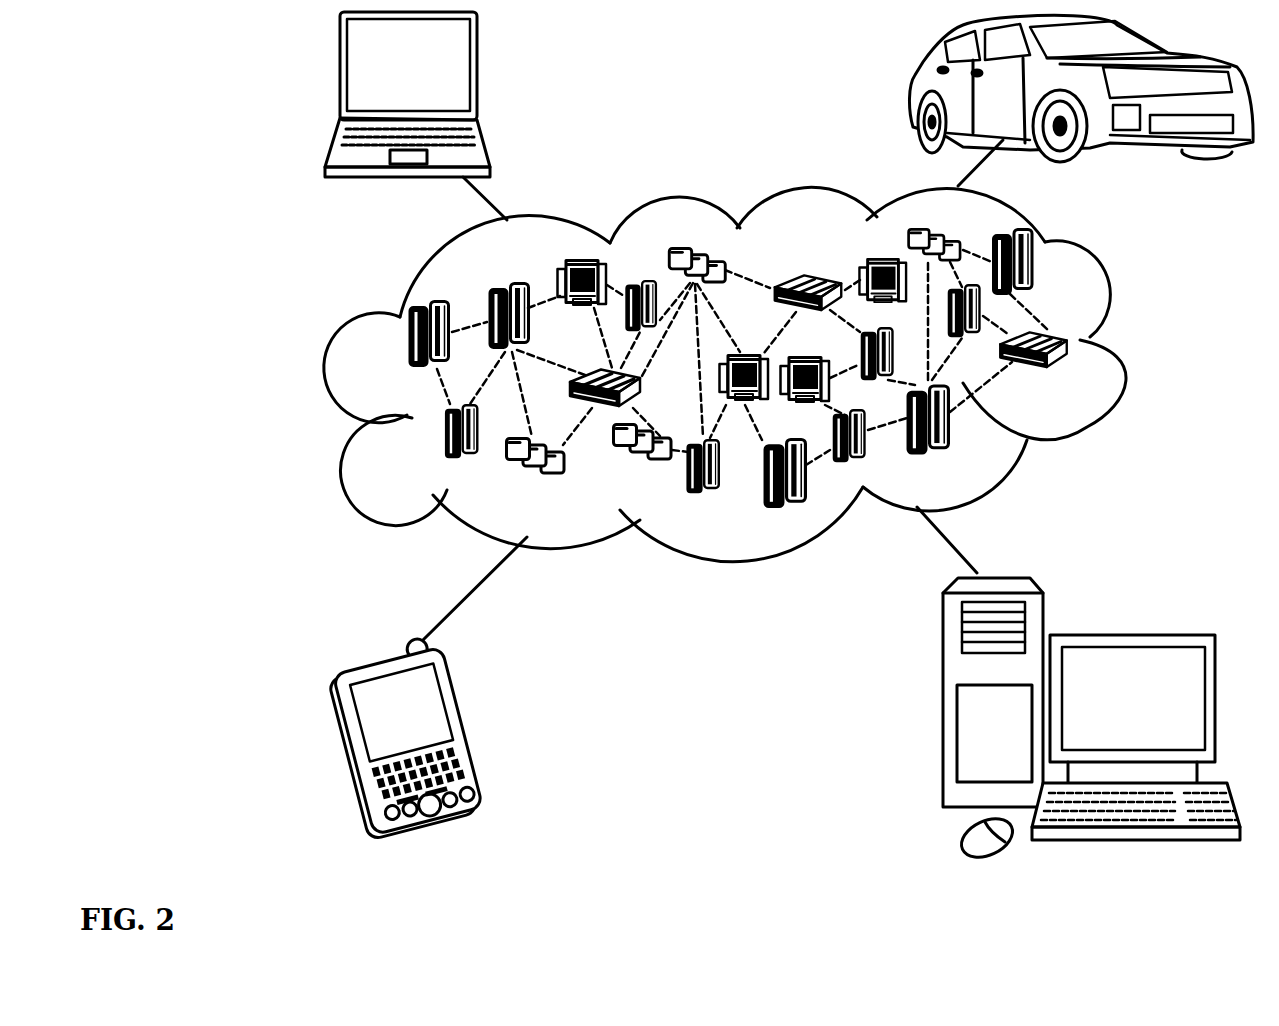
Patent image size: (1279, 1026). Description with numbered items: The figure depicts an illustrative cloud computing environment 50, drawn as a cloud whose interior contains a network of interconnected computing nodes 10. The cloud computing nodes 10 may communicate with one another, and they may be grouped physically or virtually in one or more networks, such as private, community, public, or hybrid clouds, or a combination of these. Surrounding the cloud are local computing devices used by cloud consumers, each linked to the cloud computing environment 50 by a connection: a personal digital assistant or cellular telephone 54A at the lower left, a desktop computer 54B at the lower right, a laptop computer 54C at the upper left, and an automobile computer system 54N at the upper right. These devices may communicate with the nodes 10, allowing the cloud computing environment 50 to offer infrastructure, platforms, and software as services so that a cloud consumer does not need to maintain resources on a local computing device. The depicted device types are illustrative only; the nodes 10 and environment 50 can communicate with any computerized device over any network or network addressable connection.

The cloud computing node 10 is at (1076, 378).
The cloud computing environment 50 is at (1140, 344).
The personal digital assistant or cellular telephone 54A is at (467, 727).
The desktop computer 54B is at (1130, 635).
The laptop computer 54C is at (477, 72).
The automobile computer system 54N is at (913, 92).